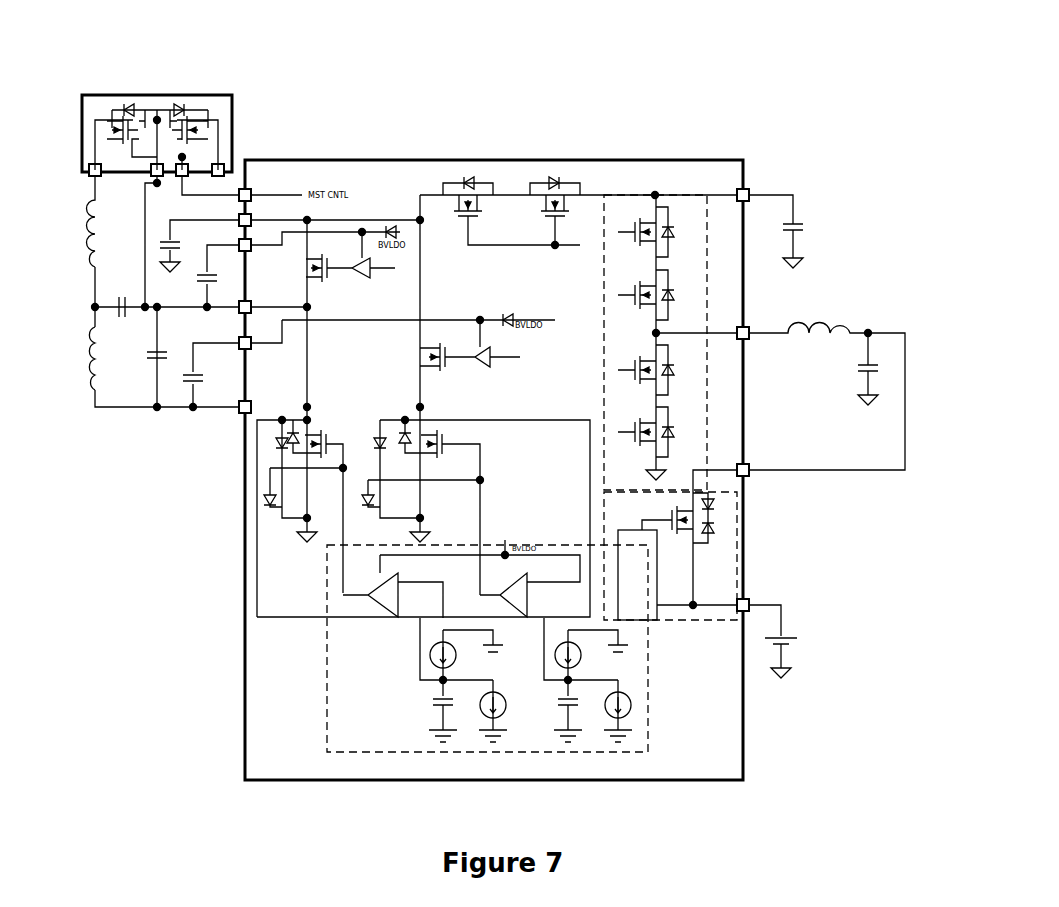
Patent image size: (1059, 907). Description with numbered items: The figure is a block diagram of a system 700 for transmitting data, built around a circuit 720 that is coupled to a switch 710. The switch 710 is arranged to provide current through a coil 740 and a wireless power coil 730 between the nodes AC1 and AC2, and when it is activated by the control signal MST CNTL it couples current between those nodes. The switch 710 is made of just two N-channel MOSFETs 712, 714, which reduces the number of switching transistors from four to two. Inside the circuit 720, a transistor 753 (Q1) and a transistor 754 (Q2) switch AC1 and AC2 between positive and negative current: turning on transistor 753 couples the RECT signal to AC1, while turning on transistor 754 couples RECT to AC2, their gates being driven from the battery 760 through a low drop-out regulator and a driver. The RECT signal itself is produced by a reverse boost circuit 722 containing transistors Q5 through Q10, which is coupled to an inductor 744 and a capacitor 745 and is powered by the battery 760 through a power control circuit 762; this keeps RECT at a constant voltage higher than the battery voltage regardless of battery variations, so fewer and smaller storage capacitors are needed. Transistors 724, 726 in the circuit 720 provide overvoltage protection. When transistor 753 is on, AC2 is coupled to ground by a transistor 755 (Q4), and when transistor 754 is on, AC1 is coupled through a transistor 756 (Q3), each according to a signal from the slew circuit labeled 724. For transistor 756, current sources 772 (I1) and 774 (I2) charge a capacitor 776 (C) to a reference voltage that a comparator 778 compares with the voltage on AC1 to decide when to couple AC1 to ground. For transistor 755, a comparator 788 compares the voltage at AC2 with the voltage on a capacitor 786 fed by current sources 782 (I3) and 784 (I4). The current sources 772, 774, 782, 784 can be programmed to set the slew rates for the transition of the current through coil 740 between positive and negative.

The system 700 is at (775, 65).
The switch 710 is at (173, 113).
The N-channel MOSFET 712 is at (122, 128).
The N-channel MOSFET 714 is at (183, 120).
The circuit 720 is at (490, 157).
The reverse boost circuit 722 is at (683, 210).
The transistor / slew circuit 724 is at (472, 227).
The transistor 726 is at (555, 222).
The wireless power coil 730 is at (88, 362).
The coil 740 is at (85, 218).
The inductor 744 is at (823, 327).
The capacitor 745 is at (847, 364).
The transistor Q1 753 is at (312, 266).
The transistor Q2 754 is at (415, 352).
The transistor Q4 755 is at (441, 443).
The transistor Q3 756 is at (312, 432).
The battery 760 is at (790, 637).
The power control circuit 762 is at (690, 576).
The current source I1 772 is at (446, 650).
The current source I2 774 is at (498, 706).
The capacitor C 776 is at (420, 700).
The comparator 778 is at (383, 594).
The current source I3 782 is at (568, 650).
The current source I4 784 is at (622, 706).
The capacitor 786 is at (567, 705).
The comparator 788 is at (523, 583).